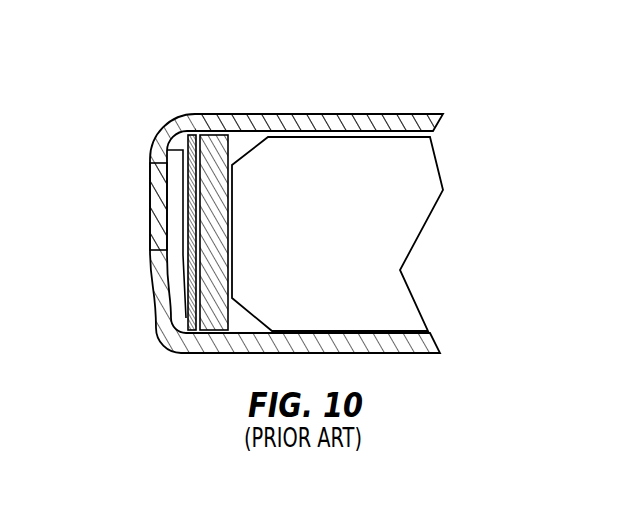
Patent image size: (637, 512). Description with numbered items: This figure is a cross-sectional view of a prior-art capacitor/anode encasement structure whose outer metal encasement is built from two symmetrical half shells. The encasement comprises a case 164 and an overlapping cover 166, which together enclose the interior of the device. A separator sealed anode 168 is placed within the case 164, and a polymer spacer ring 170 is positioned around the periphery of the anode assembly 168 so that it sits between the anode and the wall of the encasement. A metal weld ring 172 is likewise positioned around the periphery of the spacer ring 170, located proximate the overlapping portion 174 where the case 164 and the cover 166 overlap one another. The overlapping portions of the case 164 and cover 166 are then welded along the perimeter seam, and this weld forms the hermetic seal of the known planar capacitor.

The case 164 is at (166, 288).
The cover 166 is at (335, 120).
The separator sealed anode 168 is at (350, 212).
The polymer spacer ring 170 is at (227, 143).
The metal weld ring 172 is at (183, 131).
The overlapping portion 174 is at (153, 225).